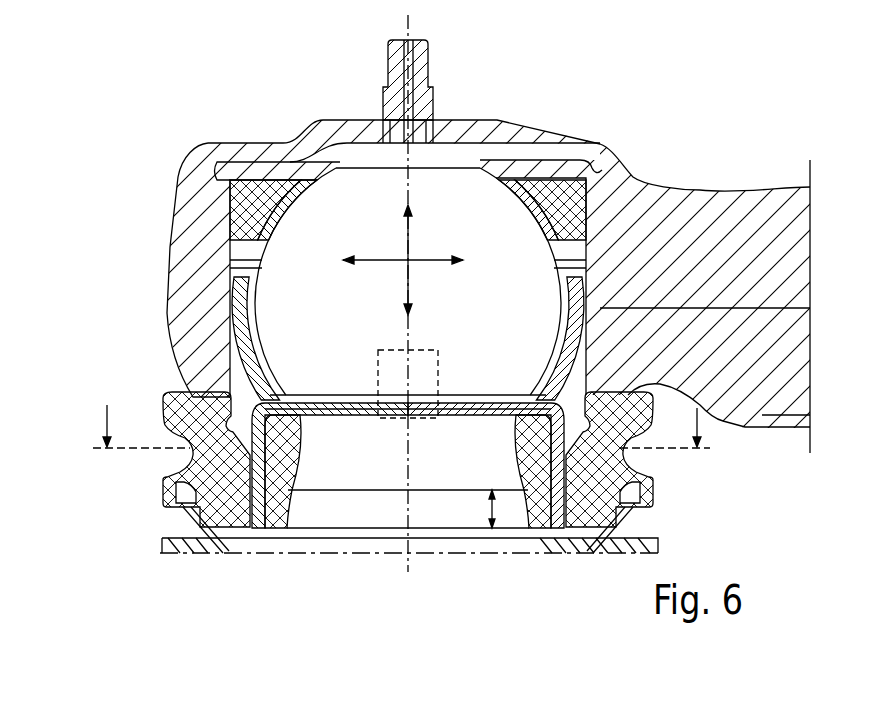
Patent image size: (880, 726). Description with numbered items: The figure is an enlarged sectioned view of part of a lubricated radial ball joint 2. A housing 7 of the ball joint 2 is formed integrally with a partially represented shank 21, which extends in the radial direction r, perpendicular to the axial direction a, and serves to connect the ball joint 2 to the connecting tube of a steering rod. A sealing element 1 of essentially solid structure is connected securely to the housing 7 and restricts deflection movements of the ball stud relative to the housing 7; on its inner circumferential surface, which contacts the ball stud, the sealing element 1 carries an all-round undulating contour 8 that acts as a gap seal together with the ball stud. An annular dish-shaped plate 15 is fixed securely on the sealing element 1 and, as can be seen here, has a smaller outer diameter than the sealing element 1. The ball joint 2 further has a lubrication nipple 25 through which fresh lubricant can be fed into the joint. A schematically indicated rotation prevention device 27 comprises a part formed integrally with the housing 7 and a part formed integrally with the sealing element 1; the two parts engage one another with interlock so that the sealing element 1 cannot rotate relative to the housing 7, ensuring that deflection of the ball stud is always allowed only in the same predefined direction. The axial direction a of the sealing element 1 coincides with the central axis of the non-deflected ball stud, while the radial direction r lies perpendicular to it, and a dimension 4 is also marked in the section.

The sealing element 1 is at (165, 383).
The ball joint 2 is at (189, 136).
The axial distance 4 is at (485, 508).
The housing 7 is at (207, 233).
The undulating contour 8 is at (390, 416).
The annular dish-shaped plate 15 is at (190, 520).
The shank 21 is at (730, 220).
The lubrication nipple 25 is at (440, 53).
The rotation prevention device 27 is at (355, 355).
The axial direction a is at (413, 240).
The radial direction r is at (432, 262).